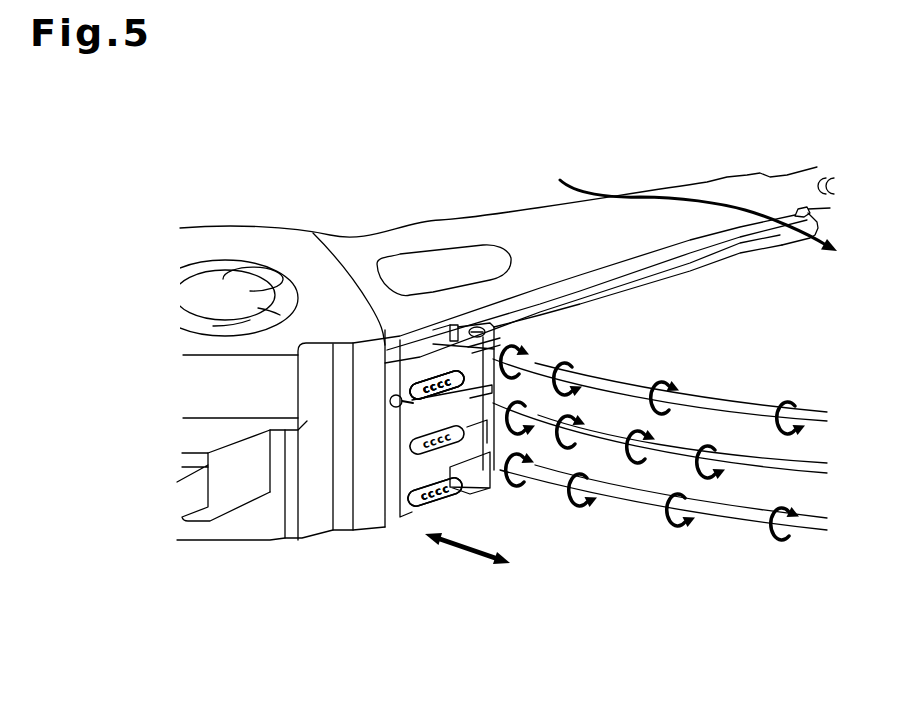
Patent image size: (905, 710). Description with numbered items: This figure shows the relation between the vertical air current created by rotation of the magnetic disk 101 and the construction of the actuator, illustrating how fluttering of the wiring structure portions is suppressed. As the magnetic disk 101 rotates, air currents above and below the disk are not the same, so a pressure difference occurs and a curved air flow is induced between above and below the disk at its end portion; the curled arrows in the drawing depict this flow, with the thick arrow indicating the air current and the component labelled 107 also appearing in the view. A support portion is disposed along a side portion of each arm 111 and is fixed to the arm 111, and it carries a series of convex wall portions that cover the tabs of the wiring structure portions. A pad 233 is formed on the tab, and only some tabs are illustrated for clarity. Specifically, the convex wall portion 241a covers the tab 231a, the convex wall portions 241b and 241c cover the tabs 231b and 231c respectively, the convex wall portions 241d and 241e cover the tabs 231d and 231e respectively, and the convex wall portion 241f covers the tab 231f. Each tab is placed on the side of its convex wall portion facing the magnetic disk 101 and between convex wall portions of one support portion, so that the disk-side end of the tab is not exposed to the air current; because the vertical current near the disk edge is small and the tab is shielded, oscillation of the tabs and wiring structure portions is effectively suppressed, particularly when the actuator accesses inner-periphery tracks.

The magnetic disk 101 is at (803, 322).
The engine nacelle 107 is at (219, 292).
The arm 111 is at (735, 191).
The pad 233 is at (397, 360).
The tab 231a is at (452, 372).
The tab 231b is at (415, 378).
The tab 231c is at (405, 375).
The tab 231d is at (417, 433).
The tab 231e is at (413, 483).
The tab 231f is at (432, 500).
The convex wall portion 241a is at (455, 342).
The convex wall portion 241b is at (459, 346).
The convex wall portion 241c is at (490, 410).
The convex wall portion 241d is at (490, 433).
The convex wall portion 241e is at (510, 480).
The convex wall portion 241f is at (477, 480).